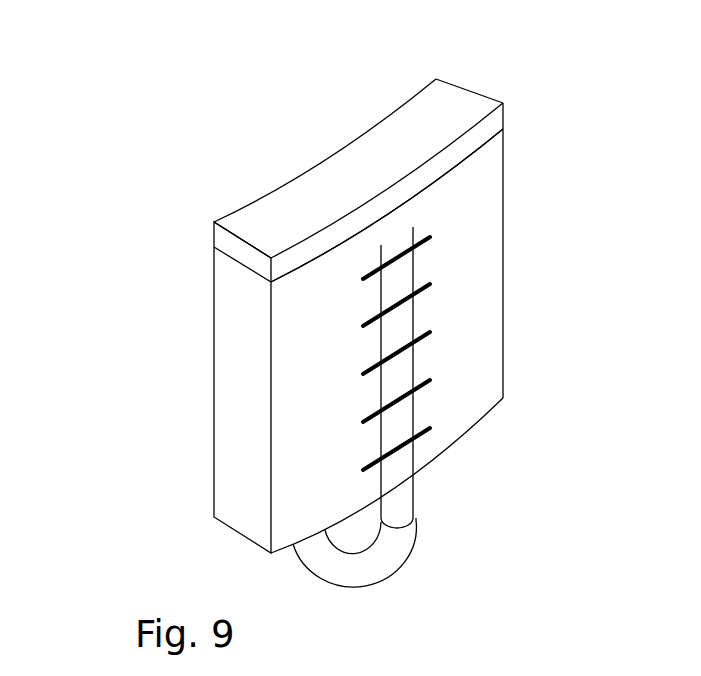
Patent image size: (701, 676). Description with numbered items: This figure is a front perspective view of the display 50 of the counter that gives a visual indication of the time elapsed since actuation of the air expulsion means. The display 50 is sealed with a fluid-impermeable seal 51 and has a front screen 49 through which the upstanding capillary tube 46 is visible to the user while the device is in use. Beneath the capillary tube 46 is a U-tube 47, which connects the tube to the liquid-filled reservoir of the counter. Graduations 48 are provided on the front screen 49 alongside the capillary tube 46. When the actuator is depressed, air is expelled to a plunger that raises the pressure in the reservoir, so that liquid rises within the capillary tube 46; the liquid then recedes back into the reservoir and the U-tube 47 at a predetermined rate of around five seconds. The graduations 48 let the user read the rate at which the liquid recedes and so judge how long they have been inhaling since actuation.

The upstanding capillary tube 46 is at (417, 277).
The U-tube 47 is at (395, 566).
The graduations 48 is at (430, 332).
The front screen 49 is at (458, 413).
The display 50 is at (228, 304).
The fluid-impermeable seal 51 is at (468, 100).